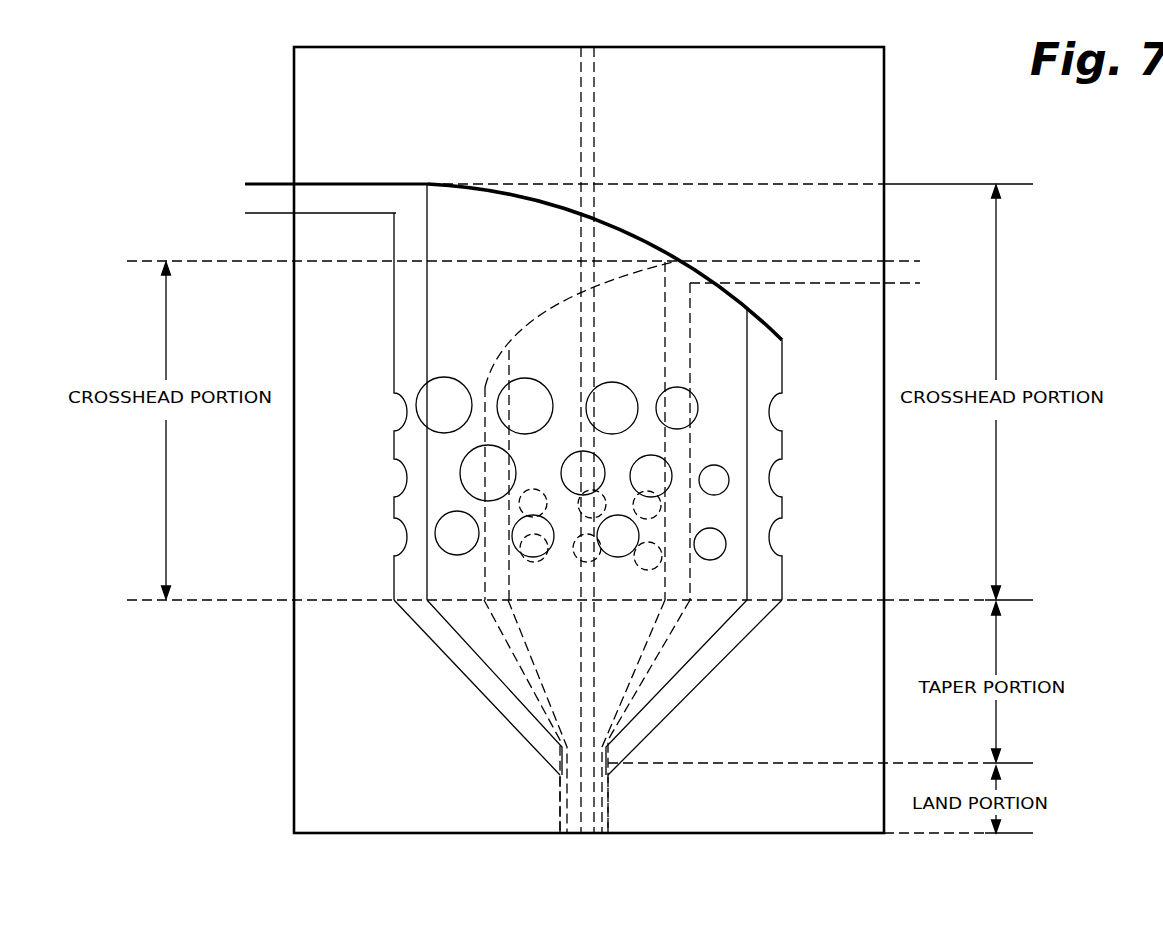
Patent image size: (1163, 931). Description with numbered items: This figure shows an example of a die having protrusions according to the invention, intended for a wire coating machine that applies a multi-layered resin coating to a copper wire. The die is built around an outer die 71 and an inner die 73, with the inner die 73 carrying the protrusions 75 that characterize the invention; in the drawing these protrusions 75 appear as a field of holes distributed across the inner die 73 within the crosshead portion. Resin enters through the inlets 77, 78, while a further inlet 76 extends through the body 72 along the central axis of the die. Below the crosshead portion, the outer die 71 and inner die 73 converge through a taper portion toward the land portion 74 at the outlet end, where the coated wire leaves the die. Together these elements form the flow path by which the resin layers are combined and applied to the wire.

The outer die 71 is at (379, 734).
The body 72 is at (397, 122).
The inner die 73 is at (710, 370).
The land portion 74 is at (602, 851).
The protrusions 75 is at (503, 502).
The further inlet 76 is at (590, 47).
The inlet 77 is at (903, 272).
The inlet 78 is at (320, 198).